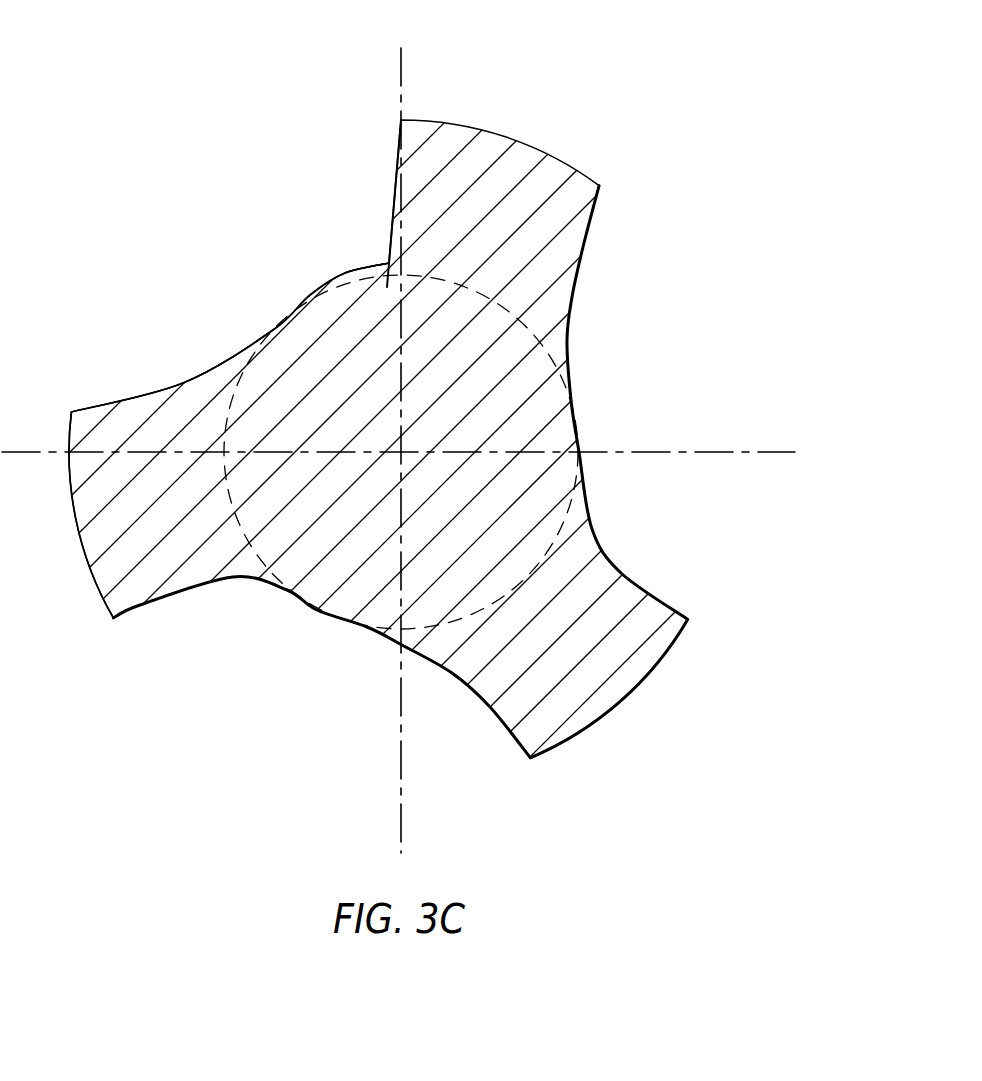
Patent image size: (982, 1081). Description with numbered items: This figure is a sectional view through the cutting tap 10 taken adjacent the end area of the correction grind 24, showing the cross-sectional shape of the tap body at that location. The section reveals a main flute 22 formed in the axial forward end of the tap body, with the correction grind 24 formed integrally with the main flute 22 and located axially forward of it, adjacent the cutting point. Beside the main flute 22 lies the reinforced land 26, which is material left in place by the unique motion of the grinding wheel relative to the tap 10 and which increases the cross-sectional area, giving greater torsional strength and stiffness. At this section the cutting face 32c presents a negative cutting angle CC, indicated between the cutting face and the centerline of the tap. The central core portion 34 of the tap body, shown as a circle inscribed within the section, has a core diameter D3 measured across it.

The cutting tap 10 is at (571, 88).
The main flute 22 is at (339, 268).
The correction grind 24 is at (386, 163).
The reinforced land 26 is at (182, 372).
The cutting face 32c is at (380, 256).
The core portion 34 is at (584, 353).
The negative cutting angle CC is at (460, 247).
The core diameter D3 is at (520, 571).